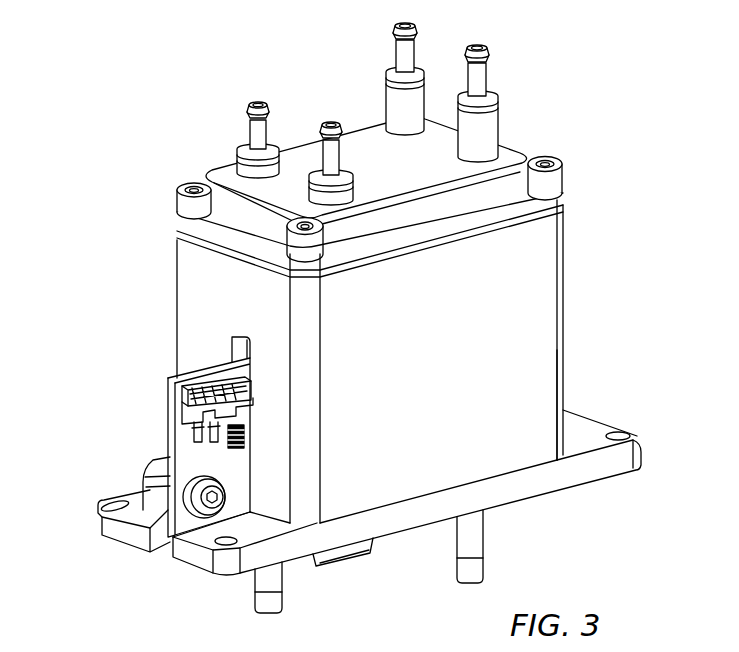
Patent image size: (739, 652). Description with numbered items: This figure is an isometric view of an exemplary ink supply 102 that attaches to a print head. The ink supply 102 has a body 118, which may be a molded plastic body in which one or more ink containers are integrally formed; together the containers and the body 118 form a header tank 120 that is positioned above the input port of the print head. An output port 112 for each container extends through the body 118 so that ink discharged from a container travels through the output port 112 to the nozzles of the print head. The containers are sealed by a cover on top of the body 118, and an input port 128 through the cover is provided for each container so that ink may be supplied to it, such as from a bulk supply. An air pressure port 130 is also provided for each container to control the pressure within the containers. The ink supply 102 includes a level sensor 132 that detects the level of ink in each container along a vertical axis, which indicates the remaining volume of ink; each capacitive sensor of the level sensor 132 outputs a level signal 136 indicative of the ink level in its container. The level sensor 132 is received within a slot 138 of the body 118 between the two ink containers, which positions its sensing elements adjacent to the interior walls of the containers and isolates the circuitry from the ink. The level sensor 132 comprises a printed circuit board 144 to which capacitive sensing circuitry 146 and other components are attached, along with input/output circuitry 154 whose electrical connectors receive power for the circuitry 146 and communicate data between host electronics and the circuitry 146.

The ink supply 102 is at (606, 120).
The output port 112 is at (262, 597).
The body 118 is at (426, 302).
The header tank 120 is at (532, 367).
The input port 128 is at (393, 28).
The air pressure port 130 is at (247, 115).
The level sensor 132 is at (150, 494).
The level signal 136 is at (368, 127).
The slot 138 is at (220, 348).
The printed circuit board 144 is at (181, 452).
The capacitive sensing circuitry 146 is at (246, 442).
The input/output circuitry 154 is at (185, 402).